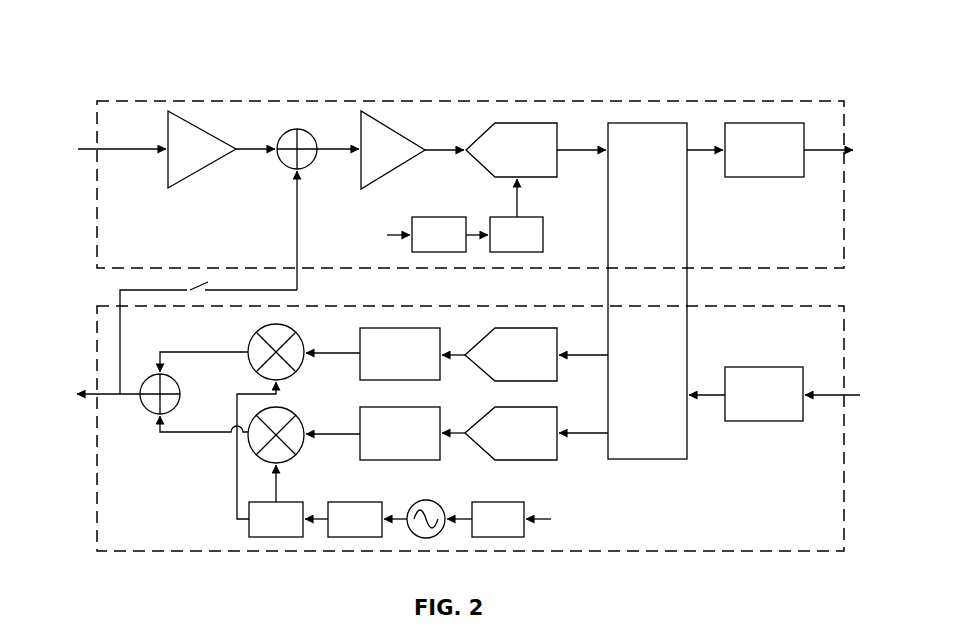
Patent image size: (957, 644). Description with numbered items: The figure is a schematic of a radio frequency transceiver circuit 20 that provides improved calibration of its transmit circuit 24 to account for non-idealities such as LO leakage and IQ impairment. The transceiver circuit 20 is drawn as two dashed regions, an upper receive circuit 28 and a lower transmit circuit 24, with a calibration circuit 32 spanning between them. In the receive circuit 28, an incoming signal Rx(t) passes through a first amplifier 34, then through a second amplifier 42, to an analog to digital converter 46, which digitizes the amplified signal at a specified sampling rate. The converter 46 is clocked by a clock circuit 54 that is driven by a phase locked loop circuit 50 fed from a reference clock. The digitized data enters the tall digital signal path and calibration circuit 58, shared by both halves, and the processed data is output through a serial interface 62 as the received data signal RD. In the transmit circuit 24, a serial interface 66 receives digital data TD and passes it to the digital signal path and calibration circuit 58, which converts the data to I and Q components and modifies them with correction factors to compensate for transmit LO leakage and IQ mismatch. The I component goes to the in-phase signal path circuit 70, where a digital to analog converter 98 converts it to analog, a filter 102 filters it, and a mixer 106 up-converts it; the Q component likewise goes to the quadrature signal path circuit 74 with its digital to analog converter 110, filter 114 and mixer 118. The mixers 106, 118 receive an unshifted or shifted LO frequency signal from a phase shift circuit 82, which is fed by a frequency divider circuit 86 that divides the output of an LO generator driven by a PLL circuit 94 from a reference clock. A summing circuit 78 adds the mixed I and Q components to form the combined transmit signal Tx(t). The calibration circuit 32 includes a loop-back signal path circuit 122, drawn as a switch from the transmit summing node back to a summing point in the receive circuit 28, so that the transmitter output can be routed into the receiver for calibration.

The radio frequency transceiver circuit 20 is at (136, 58).
The transmit circuit 24 is at (186, 553).
The receive circuit 28 is at (185, 101).
The calibration circuit 32 is at (513, 291).
The amplifier 34 is at (202, 149).
The amplifier 42 is at (393, 150).
The analog to digital converter 46 is at (511, 150).
The phase locked loop circuit 50 is at (439, 234).
The clock circuit 54 is at (516, 234).
The digital signal path and calibration circuit 58 is at (647, 291).
The serial interface 62 is at (764, 150).
The serial interface 66 is at (764, 394).
The in-phase signal path circuit 70 is at (537, 322).
The quadrature signal path circuit 74 is at (540, 400).
The summing circuit 78 is at (178, 385).
The phase shift circuit 82 is at (276, 519).
The frequency divider circuit 86 is at (355, 519).
The PLL circuit 94 is at (498, 519).
The digital to analog converter 98 is at (511, 354).
The filter 102 is at (400, 354).
The mixer 106 is at (300, 333).
The digital to analog converter 110 is at (511, 433).
The filter 114 is at (400, 433).
The mixer 118 is at (300, 413).
The loop-back signal path circuit 122 is at (168, 295).